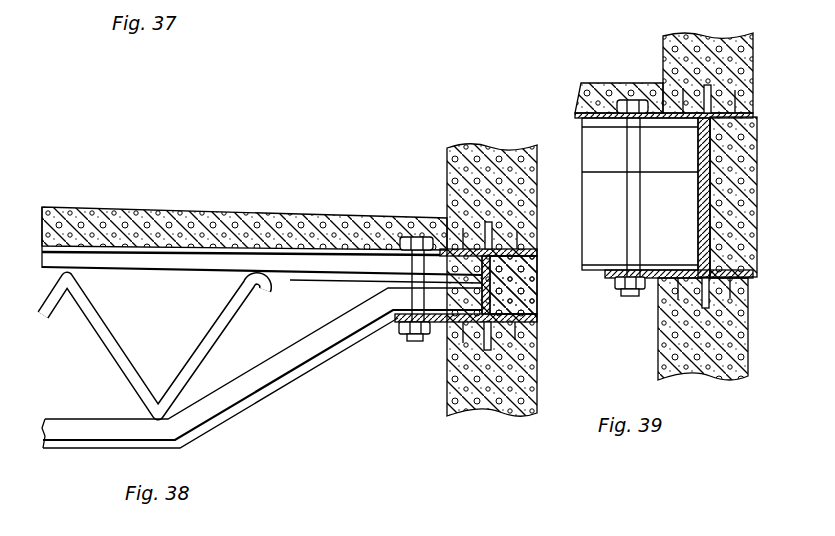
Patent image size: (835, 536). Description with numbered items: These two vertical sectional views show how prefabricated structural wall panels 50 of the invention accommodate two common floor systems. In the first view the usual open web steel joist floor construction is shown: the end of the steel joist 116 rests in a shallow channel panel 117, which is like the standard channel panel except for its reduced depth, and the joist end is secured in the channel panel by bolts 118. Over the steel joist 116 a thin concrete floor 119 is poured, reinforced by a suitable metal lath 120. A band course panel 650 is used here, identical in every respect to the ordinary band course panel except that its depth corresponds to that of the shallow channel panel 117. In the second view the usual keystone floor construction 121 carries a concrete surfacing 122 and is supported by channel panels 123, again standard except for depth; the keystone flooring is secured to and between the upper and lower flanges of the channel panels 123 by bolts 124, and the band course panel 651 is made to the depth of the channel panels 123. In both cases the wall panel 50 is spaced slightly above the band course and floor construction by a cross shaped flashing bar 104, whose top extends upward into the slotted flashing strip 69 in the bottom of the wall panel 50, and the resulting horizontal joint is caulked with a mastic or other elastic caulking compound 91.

In FIG. 38, the wall panel 50 is at (490, 218).
In FIG. 39, the wall panel 50 is at (740, 53).
In FIG. 38, the slotted flashing strip 69 is at (462, 229).
In FIG. 39, the slotted flashing strip 69 is at (738, 85).
In FIG. 38, the caulking compound 91 is at (456, 248).
In FIG. 39, the caulking compound 91 is at (753, 113).
In FIG. 38, the cross shaped flashing bar 104 is at (538, 260).
In FIG. 39, the cross shaped flashing bar 104 is at (715, 127).
In FIG. 38, the steel joist 116 is at (327, 270).
In FIG. 38, the shallow channel panel 117 is at (523, 282).
In FIG. 38, the bolt 118 is at (406, 340).
In FIG. 38, the thin concrete floor 119 is at (217, 223).
In FIG. 38, the metal lath 120 is at (108, 242).
In FIG. 39, the keystone floor construction 121 is at (593, 243).
In FIG. 39, the concrete surfacing 122 is at (592, 100).
In FIG. 39, the channel panel 123 is at (705, 203).
In FIG. 39, the bolt 124 is at (630, 102).
In FIG. 38, the band course panel 650 is at (540, 323).
In FIG. 39, the band course panel 651 is at (710, 255).